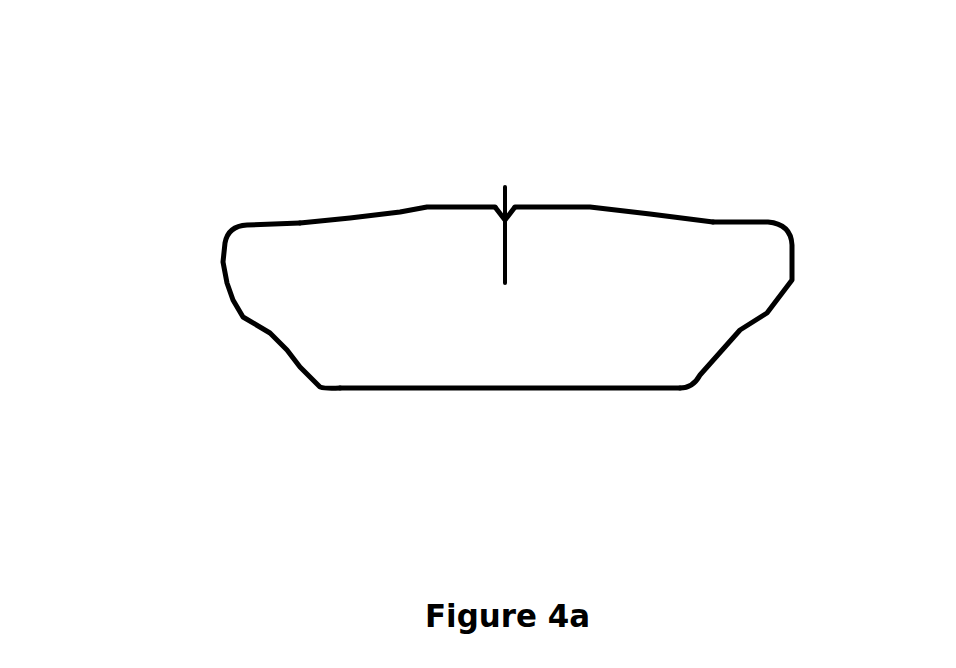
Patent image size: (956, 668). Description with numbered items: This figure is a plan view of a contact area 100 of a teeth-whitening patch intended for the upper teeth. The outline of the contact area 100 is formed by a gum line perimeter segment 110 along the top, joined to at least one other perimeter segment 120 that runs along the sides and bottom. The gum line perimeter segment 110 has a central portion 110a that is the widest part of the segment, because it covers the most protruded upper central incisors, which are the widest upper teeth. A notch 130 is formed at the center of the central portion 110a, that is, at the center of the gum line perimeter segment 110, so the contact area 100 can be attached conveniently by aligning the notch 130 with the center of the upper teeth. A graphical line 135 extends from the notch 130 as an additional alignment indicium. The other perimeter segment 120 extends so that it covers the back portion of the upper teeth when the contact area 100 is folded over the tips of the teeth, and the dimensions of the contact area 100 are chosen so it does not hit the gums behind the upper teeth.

The contact area 100 is at (185, 161).
The gum line perimeter segment 110 is at (287, 222).
The central portion 110a is at (400, 207).
The other perimeter segment 120 is at (790, 283).
The notch 130 is at (506, 206).
The line 135 is at (503, 224).